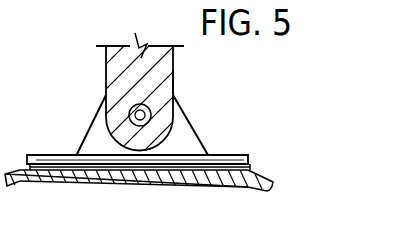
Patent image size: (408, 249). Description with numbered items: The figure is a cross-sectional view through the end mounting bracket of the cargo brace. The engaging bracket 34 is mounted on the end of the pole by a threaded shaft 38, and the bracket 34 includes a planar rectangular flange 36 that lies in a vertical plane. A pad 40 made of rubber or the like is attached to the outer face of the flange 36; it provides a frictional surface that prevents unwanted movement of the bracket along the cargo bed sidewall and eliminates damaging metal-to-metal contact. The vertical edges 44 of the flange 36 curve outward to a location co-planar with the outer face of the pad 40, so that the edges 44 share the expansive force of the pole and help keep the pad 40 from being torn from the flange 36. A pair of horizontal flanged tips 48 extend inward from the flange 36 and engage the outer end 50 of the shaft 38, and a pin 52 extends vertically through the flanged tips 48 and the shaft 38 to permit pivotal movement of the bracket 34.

The threaded shaft 38 is at (175, 51).
The pin 52 is at (174, 87).
The outer end of the shaft 50 is at (151, 114).
The horizontal flanged tips 48 is at (178, 132).
The engaging bracket 34 is at (248, 157).
The planar rectangular flange 36 is at (252, 167).
The vertical edges 44 is at (272, 183).
The pad 40 is at (203, 188).